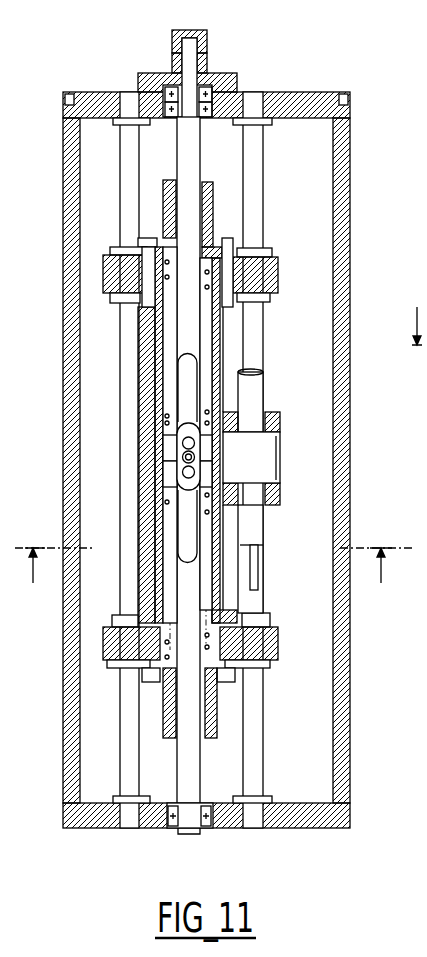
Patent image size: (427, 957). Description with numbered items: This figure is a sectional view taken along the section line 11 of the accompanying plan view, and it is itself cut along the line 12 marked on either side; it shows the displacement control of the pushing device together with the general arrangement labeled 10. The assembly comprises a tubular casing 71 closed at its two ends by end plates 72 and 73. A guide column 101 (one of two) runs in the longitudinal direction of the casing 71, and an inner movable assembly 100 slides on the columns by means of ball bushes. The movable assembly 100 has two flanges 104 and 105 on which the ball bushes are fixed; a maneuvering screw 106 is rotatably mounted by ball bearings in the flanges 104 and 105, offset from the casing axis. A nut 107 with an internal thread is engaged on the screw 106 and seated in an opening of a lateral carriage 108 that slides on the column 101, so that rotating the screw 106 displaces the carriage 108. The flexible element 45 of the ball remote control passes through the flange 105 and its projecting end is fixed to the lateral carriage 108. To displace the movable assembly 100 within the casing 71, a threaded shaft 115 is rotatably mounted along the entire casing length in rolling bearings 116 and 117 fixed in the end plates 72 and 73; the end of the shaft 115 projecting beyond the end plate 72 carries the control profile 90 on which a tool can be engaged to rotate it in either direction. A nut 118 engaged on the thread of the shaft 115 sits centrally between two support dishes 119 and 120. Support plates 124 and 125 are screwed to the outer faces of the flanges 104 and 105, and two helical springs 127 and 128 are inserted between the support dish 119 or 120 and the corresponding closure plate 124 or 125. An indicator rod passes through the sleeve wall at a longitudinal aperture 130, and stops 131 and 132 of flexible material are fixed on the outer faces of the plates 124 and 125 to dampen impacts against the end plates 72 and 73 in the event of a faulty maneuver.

The section line 10 is at (416, 405).
The section line 11— 11 is at (415, 343).
The section line 12- 12 is at (215, 551).
The flexible element 45 is at (258, 572).
The casing 71 is at (343, 231).
The end plate 72 is at (300, 92).
The end plate 73 is at (350, 823).
The control profile 90 is at (207, 42).
The inner movable assembly 100 is at (117, 341).
The guide column 101 is at (263, 722).
The end plate (flange) 104 is at (278, 275).
The end plate (flange) 105 is at (103, 647).
The maneuvering screw 106 is at (258, 389).
The nut 107 is at (280, 453).
The lateral carriage 108 is at (277, 412).
The threaded shaft 115 is at (193, 160).
The rolling bearing 116 is at (163, 77).
The rolling bearing 117 is at (168, 832).
The nut 118 is at (209, 458).
The support dish 119 is at (209, 473).
The support dish 120 is at (170, 444).
The support plate 124 is at (222, 255).
The support plate 125 is at (118, 664).
The helical spring 127 is at (150, 305).
The helical spring 128 is at (166, 417).
The aperture 130 is at (195, 360).
The stop 131 is at (163, 193).
The stop 132 is at (162, 725).